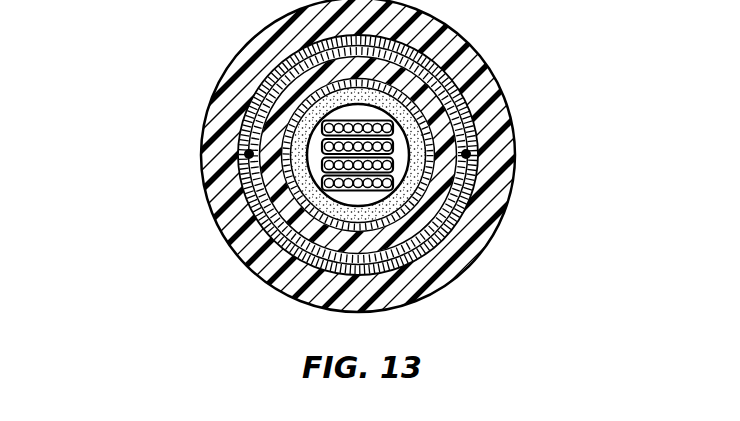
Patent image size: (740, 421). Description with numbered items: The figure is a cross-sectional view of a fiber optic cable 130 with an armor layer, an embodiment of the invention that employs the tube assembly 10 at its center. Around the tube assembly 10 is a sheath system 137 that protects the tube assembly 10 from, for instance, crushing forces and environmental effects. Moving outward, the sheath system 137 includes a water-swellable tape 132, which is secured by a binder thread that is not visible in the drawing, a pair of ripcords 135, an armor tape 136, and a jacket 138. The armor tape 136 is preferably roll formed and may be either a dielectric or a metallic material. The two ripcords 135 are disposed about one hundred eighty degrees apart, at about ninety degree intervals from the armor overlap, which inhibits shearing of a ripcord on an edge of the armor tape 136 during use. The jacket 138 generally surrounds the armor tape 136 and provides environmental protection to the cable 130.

The cable 130 is at (370, 165).
The tube assembly 10 is at (437, 132).
The water-swellable tape 132 is at (466, 182).
The ripcords 135 is at (471, 154).
The armor tape 136 is at (245, 232).
The sheath system 137 is at (243, 146).
The jacket 138 is at (482, 233).